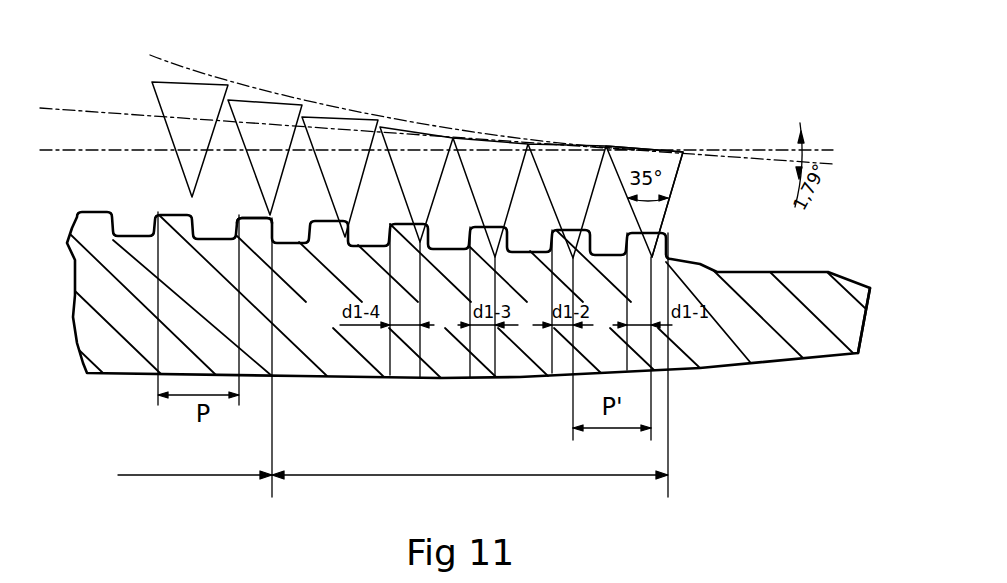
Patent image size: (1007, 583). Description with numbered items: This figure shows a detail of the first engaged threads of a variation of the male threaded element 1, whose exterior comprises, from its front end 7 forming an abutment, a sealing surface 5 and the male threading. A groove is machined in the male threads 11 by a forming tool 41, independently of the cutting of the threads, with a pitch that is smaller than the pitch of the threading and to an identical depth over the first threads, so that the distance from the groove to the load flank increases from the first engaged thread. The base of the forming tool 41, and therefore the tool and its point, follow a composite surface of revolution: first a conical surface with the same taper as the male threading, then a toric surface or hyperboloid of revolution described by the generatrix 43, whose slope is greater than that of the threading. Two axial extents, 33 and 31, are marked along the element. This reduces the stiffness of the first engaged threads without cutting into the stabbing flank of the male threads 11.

The male threaded element 1 is at (505, 175).
The sealing surface 5 is at (829, 271).
The front end 7 is at (862, 336).
The male threads 11 is at (253, 222).
The finishing section 31 is at (470, 365).
The lead section 33 is at (195, 357).
The forming tool 41 is at (667, 160).
The generatrix 43 is at (212, 80).